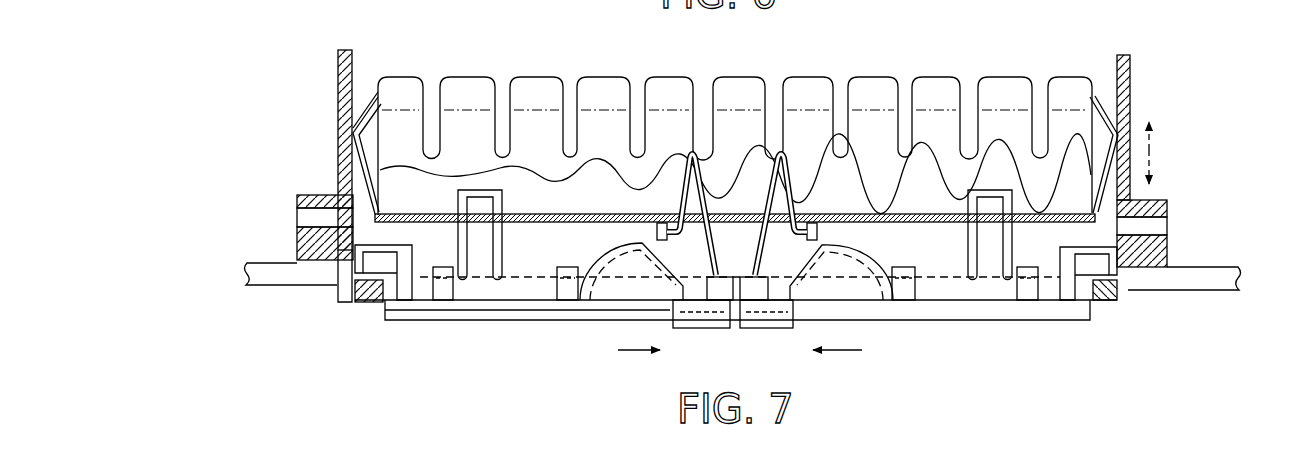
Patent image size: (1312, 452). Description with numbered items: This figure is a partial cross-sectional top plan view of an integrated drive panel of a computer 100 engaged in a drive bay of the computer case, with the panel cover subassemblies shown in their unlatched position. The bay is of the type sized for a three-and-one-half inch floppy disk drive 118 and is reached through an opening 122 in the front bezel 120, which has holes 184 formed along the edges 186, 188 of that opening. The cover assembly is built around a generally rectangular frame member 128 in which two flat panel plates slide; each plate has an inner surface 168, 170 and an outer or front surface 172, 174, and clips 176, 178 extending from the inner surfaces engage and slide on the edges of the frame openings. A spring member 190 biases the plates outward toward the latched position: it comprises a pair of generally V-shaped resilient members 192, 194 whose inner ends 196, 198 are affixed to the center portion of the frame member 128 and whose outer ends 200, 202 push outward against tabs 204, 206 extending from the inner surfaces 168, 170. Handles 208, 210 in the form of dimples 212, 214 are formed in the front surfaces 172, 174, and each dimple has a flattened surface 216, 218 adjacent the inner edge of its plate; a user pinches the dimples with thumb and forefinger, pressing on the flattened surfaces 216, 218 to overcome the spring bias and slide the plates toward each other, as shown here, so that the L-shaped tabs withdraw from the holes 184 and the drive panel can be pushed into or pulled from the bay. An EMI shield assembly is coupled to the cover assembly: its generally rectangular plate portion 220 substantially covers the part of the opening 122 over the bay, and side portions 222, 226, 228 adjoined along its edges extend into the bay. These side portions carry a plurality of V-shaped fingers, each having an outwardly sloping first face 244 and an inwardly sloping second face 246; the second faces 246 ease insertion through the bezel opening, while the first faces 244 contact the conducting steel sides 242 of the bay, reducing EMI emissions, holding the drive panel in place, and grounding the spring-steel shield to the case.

The computer 100 is at (1156, 67).
The floppy disk drive 118 is at (1029, 63).
The front bezel 120 is at (272, 275).
The opening 122 is at (349, 296).
The frame member 128 is at (1060, 240).
The inner surface 168 is at (565, 221).
The inner surface 170 is at (958, 288).
The outer surface 172 is at (460, 321).
The outer surface 174 is at (1011, 321).
The clip 176 is at (567, 291).
The clip 178 is at (905, 292).
The holes 184 is at (297, 220).
The edge of opening 186 is at (343, 297).
The edge of opening 188 is at (1123, 293).
The spring member 190 is at (714, 150).
The V-shaped resilient member 192 is at (708, 202).
The V-shaped resilient member 194 is at (756, 215).
The inner end 196 is at (735, 268).
The inner end 198 is at (742, 268).
The outer end 200 is at (668, 224).
The outer end 202 is at (797, 218).
The tab 204 is at (657, 237).
The tab 206 is at (820, 237).
The handle 208 is at (605, 270).
The handle 210 is at (866, 288).
The dimple 212 is at (646, 297).
The dimple 214 is at (840, 299).
The flattened surface 216 is at (683, 283).
The flattened surface 218 is at (792, 285).
The plate portion 220 is at (508, 224).
The side portion 222 is at (930, 88).
The side portion 226 is at (1100, 110).
The side portion 228 is at (365, 112).
The sides 242 is at (353, 68).
The outwardly sloping first face 244 is at (400, 160).
The inwardly sloping second face 246 is at (357, 130).